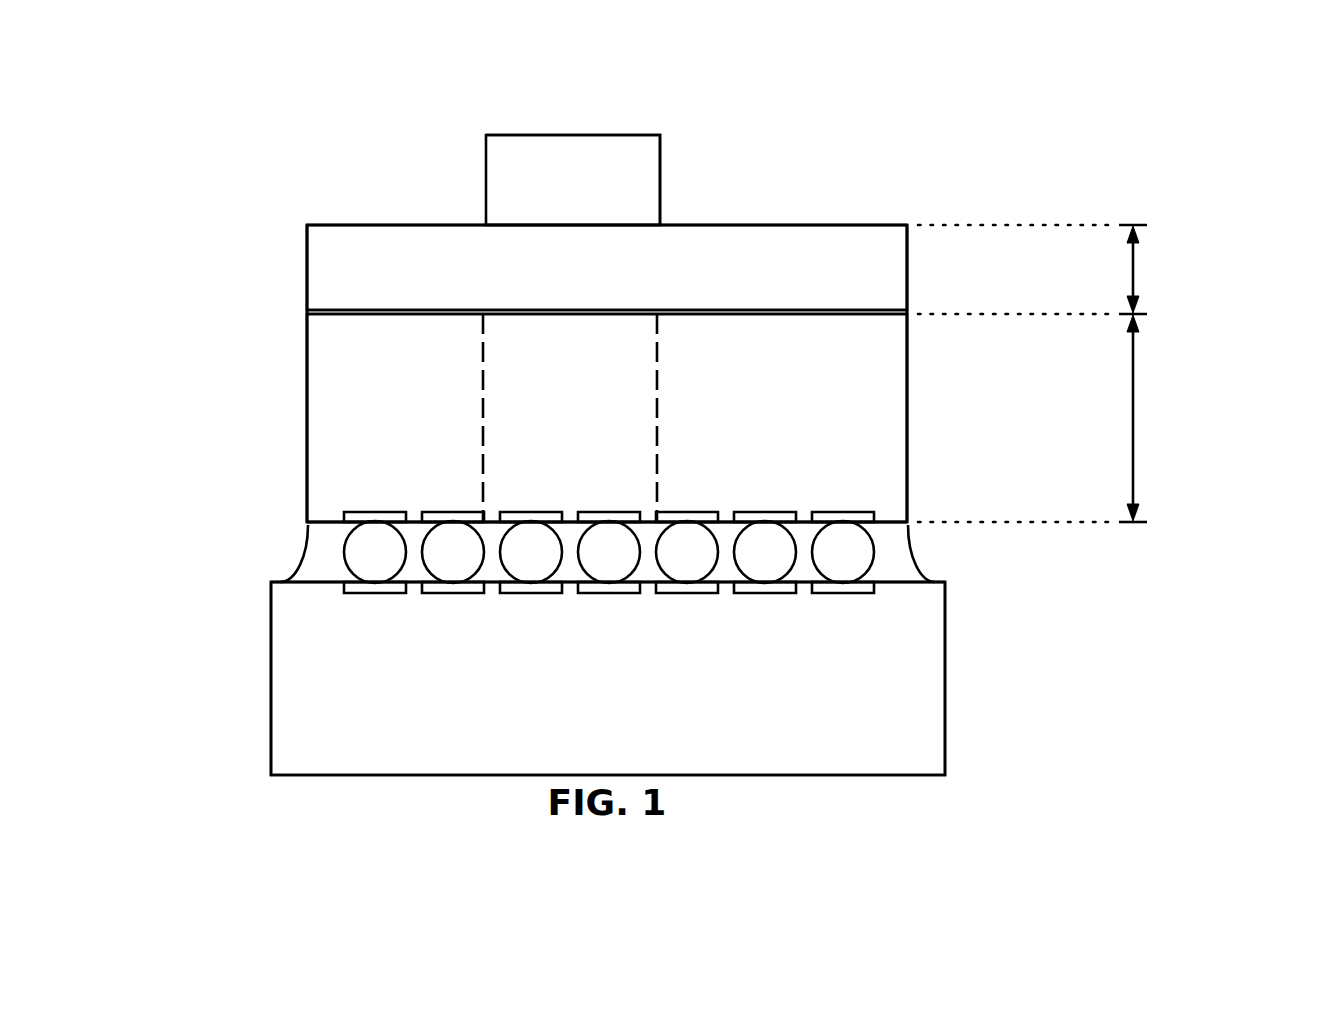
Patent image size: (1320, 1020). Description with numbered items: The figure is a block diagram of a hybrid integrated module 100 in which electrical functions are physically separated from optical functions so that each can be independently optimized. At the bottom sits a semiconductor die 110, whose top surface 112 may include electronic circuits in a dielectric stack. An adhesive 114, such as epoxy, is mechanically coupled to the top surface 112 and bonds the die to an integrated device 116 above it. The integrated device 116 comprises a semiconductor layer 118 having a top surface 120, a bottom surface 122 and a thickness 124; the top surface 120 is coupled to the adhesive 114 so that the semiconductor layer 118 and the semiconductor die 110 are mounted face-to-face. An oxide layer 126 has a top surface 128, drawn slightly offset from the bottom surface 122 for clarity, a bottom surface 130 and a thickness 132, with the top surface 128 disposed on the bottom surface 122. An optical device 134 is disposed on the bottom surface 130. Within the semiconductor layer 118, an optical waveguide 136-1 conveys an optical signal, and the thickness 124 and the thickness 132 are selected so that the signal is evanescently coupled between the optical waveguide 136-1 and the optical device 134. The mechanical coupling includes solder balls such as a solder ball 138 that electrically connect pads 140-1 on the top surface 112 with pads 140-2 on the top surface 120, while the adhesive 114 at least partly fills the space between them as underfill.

The hybrid integrated module 100 is at (317, 108).
The semiconductor die 110 is at (591, 766).
The top surface 112 is at (318, 583).
The adhesive 114 is at (330, 545).
The integrated device 116 is at (935, 522).
The semiconductor layer 118 is at (866, 394).
The top surface 120 is at (908, 523).
The bottom surface 122 is at (358, 315).
The thickness 124 is at (1134, 437).
The oxide layer 126 is at (591, 290).
The top surface 128 is at (335, 308).
The bottom surface 130 is at (860, 225).
The thickness 132 is at (1134, 282).
The optical device 134 is at (556, 216).
The optical waveguide 136-1 is at (551, 430).
The solder ball 138 is at (850, 553).
The pads 140-1 is at (872, 613).
The pads 140-2 is at (605, 468).